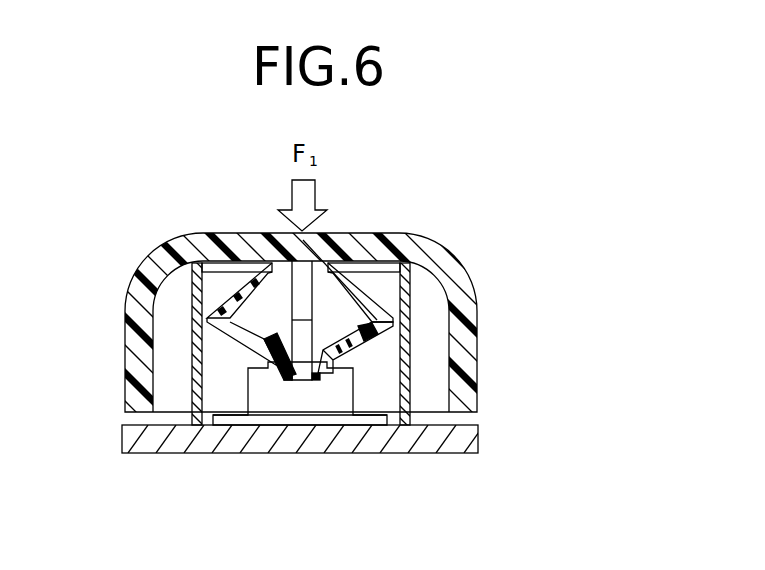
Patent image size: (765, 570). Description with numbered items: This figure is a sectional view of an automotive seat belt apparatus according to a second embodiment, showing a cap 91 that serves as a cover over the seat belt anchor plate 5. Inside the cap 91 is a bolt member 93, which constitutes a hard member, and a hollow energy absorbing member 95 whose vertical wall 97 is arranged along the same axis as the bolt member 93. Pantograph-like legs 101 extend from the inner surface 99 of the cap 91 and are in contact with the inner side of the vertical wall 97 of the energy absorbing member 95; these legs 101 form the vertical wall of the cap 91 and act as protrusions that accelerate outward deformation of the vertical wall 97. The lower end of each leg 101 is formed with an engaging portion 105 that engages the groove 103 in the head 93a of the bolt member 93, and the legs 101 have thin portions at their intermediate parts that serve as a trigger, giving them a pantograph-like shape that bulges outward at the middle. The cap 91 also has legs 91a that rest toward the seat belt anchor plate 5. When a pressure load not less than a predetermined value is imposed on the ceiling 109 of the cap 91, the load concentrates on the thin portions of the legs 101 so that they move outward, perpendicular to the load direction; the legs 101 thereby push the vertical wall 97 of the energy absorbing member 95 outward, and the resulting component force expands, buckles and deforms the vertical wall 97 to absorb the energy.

The seat belt anchor plate 5 is at (163, 438).
The cap 91 is at (423, 240).
The leg of cap member 91a is at (150, 268).
The bolt member 93 is at (362, 388).
The head of the bolt member 93a is at (341, 402).
The energy absorbing member 95 is at (412, 305).
The vertical wall 97 is at (192, 341).
The inner surface of the cap 99 is at (224, 272).
The pantograph-like legs 101 is at (361, 285).
The groove 103 is at (372, 346).
The engaging portion 105 is at (320, 374).
The ceiling of the cap 109 is at (312, 250).